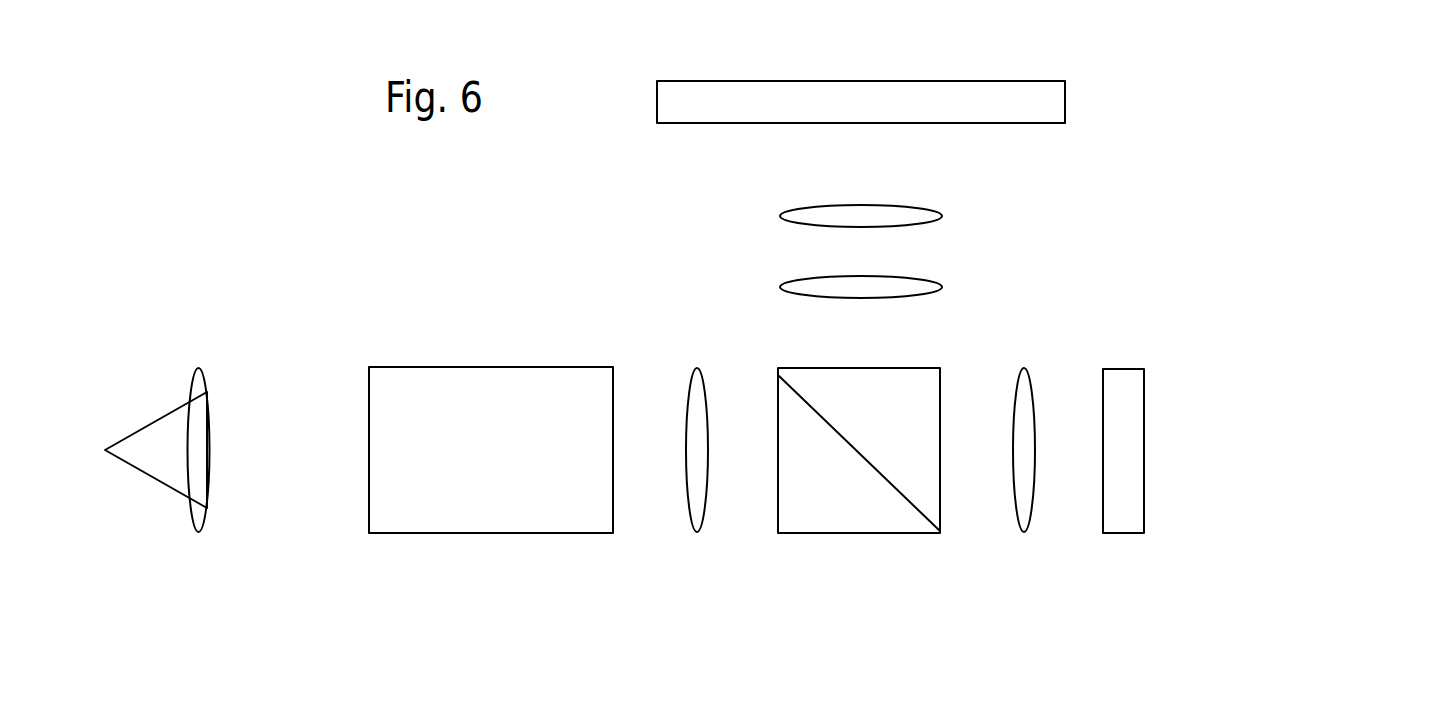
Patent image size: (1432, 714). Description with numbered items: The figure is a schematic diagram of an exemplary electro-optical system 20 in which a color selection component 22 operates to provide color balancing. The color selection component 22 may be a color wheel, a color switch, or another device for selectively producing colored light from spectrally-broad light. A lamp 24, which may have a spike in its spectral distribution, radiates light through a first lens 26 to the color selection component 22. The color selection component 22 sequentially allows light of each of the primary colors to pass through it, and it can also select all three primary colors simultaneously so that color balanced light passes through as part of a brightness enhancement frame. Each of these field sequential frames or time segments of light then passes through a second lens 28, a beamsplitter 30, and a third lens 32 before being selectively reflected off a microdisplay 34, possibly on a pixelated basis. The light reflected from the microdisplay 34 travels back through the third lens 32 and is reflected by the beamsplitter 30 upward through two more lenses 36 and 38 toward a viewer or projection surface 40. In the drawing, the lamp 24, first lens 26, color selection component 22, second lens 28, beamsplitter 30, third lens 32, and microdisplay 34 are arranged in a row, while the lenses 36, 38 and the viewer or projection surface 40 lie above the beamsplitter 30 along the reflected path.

The electro-optical system 20 is at (1330, 327).
The color selection component 22 is at (533, 513).
The lamp 24 is at (165, 470).
The first lens 26 is at (287, 408).
The second lens 28 is at (697, 492).
The beamsplitter 30 is at (898, 513).
The third lens 32 is at (1023, 502).
The microdisplay 34 is at (1123, 503).
The lens 36 is at (818, 287).
The lens 38 is at (818, 215).
The viewer or projection surface 40 is at (1032, 103).